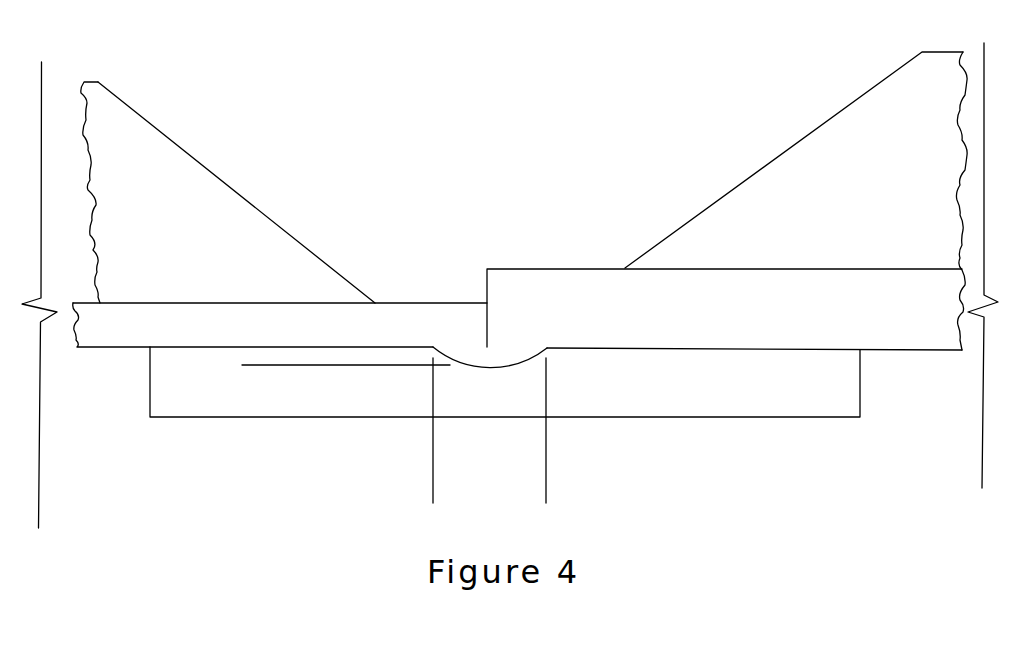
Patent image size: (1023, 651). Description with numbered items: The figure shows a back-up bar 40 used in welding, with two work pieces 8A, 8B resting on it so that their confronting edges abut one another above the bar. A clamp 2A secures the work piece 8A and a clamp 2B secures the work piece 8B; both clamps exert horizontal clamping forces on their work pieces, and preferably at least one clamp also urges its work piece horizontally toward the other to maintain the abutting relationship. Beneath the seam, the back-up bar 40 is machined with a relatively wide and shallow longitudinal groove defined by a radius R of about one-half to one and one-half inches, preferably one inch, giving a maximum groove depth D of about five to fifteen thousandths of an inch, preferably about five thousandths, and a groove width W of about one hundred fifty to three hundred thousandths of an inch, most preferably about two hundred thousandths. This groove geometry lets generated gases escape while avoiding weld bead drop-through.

The clamp 2A is at (175, 182).
The clamp 2B is at (810, 178).
The work piece 8A is at (178, 335).
The work piece 8B is at (733, 332).
The back-up bar 40 is at (612, 407).
The groove radius R is at (515, 365).
The groove depth D is at (254, 318).
The groove width W is at (546, 483).